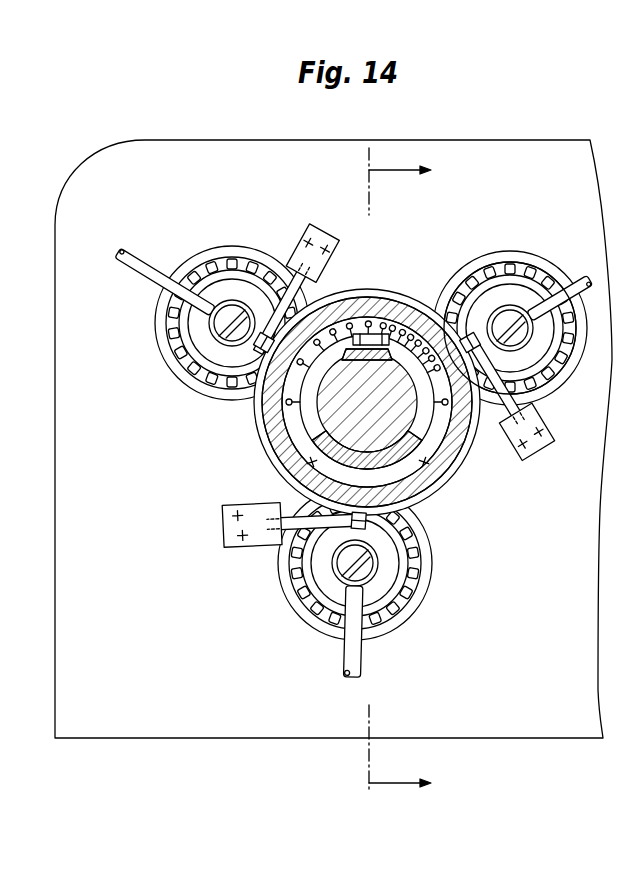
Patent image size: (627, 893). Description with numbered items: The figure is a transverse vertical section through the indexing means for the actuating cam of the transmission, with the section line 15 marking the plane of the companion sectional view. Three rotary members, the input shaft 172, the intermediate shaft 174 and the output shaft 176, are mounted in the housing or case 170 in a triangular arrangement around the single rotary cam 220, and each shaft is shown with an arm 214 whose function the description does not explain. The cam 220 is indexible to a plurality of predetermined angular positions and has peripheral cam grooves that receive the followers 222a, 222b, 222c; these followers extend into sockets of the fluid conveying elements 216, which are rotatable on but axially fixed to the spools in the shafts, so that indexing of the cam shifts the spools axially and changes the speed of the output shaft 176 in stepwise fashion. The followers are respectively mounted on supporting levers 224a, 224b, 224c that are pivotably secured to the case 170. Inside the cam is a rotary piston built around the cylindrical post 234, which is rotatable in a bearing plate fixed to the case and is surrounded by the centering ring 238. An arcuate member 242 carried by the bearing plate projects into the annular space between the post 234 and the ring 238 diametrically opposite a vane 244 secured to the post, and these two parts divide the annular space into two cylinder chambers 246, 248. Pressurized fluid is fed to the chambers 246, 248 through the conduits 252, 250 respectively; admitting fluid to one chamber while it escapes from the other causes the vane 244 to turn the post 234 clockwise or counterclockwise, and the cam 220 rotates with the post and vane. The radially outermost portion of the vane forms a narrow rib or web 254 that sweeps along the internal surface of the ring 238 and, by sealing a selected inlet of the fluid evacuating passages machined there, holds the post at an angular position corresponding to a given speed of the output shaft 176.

The section line 15- 15 is at (414, 471).
The housing or case 170 is at (178, 150).
The input shaft 172 is at (200, 332).
The intermediate shaft 174 is at (385, 580).
The output shaft 176 is at (507, 293).
The lever arm 214 is at (142, 266).
The fluid conveying element 216 is at (522, 346).
The rotary cam 220 is at (346, 362).
The follower 222a is at (258, 355).
The follower 222b is at (377, 522).
The follower 222c is at (471, 333).
The supporting lever 224a is at (300, 245).
The supporting lever 224b is at (280, 545).
The supporting lever 224c is at (505, 425).
The cylindrical post 234 is at (340, 423).
The centering ring 238 is at (432, 480).
The arcuate member 242 is at (264, 458).
The vane 244 is at (362, 355).
The cylinder chamber 246 is at (300, 445).
The cylinder chamber 248 is at (404, 336).
The conduit 250 is at (441, 470).
The conduit 252 is at (272, 420).
The rib or web 254 is at (382, 352).